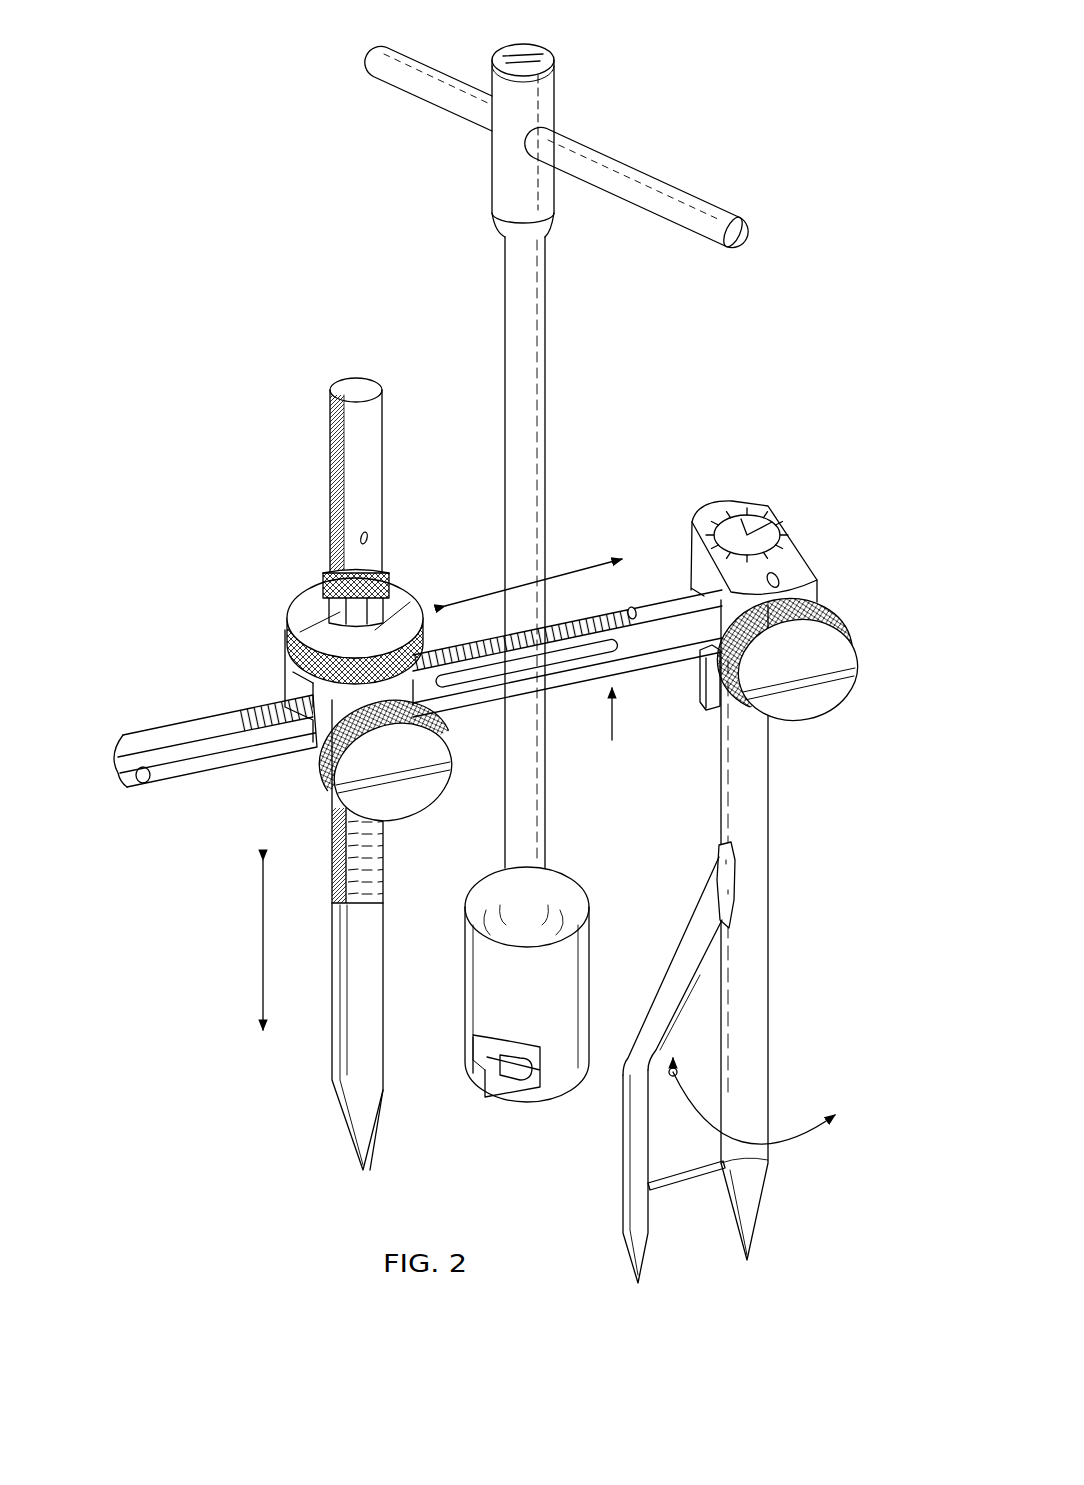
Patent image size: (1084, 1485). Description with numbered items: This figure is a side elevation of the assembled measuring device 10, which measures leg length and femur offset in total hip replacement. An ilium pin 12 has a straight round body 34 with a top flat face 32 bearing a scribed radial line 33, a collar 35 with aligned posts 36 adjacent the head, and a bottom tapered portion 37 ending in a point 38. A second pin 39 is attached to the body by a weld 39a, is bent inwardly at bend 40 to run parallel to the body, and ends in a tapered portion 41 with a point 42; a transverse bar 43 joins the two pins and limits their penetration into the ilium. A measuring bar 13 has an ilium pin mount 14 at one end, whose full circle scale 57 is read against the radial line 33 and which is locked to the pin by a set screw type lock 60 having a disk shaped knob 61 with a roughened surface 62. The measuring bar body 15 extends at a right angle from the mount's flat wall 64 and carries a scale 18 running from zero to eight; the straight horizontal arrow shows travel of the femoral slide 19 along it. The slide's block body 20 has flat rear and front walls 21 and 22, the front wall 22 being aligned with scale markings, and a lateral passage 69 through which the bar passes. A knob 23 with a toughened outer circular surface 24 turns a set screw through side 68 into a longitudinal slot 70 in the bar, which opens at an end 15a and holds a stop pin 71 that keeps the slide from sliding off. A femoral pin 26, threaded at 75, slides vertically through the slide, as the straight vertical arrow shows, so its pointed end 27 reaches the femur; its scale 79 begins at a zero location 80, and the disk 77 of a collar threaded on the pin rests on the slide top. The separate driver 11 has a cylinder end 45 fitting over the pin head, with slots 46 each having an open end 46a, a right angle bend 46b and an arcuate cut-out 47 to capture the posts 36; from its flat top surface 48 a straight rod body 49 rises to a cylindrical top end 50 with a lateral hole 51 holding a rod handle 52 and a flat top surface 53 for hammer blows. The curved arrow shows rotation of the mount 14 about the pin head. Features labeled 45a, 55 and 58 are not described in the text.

The measuring device 10 is at (823, 830).
The driver 11 is at (553, 295).
The ilium pin 12 is at (778, 918).
The measuring bar 13 is at (595, 721).
The ilium pin mount 14 is at (791, 503).
The measuring bar body 15 is at (567, 657).
The bar end 15a is at (118, 757).
The scale 18 is at (603, 617).
The femoral slide 19 is at (283, 648).
The body 20 is at (285, 668).
The rear wall 21 is at (293, 677).
The front wall 22 is at (430, 720).
The knob 23 is at (385, 759).
The toughened outer circular surface 24 is at (331, 800).
The femoral pin 26 is at (350, 958).
The pin pointed end 27 is at (362, 1170).
The top flat face 32 is at (760, 507).
The radial line 33 is at (770, 525).
The body 34 is at (770, 805).
The collar 35 is at (718, 705).
The posts 36 is at (703, 668).
The bottom tapered portion 37 is at (750, 1188).
The point 38 is at (748, 1262).
The second pin 39 is at (642, 1071).
The weld 39a is at (720, 850).
The bend 40 is at (543, 1070).
The tapered portion 41 is at (628, 1253).
The point 42 is at (640, 1290).
The transverse bar 43 is at (685, 1177).
The cylinder end 45 is at (535, 1007).
The cylinder side 45a is at (597, 1100).
The slots 46 is at (504, 1085).
The open end 46a is at (478, 1062).
The right angle bend 46b is at (473, 1037).
The arcuate cut-out 47 is at (537, 1077).
The flat top surface 48 is at (575, 885).
The straight rod body 49 is at (535, 468).
The cylindrical top end 50 is at (552, 88).
The lateral hole 51 is at (548, 118).
The handle 52 is at (634, 172).
The flat top surface 53 is at (493, 53).
The bracket top face 55 is at (800, 545).
The full circle scale 57 is at (748, 497).
The hole 58 is at (780, 578).
The set screw type lock 60 is at (863, 642).
The disk shaped knob 61 is at (815, 671).
The roughened surface 62 is at (790, 716).
The flat wall 64 is at (691, 540).
The side 68 is at (310, 760).
The lateral passage 69 is at (307, 742).
The longitudinal slot 70 is at (196, 755).
The stop pin 71 is at (143, 767).
The threads 75 is at (353, 475).
The disk 77 is at (300, 612).
The scale 79 is at (323, 584).
The zero location 80 is at (368, 540).